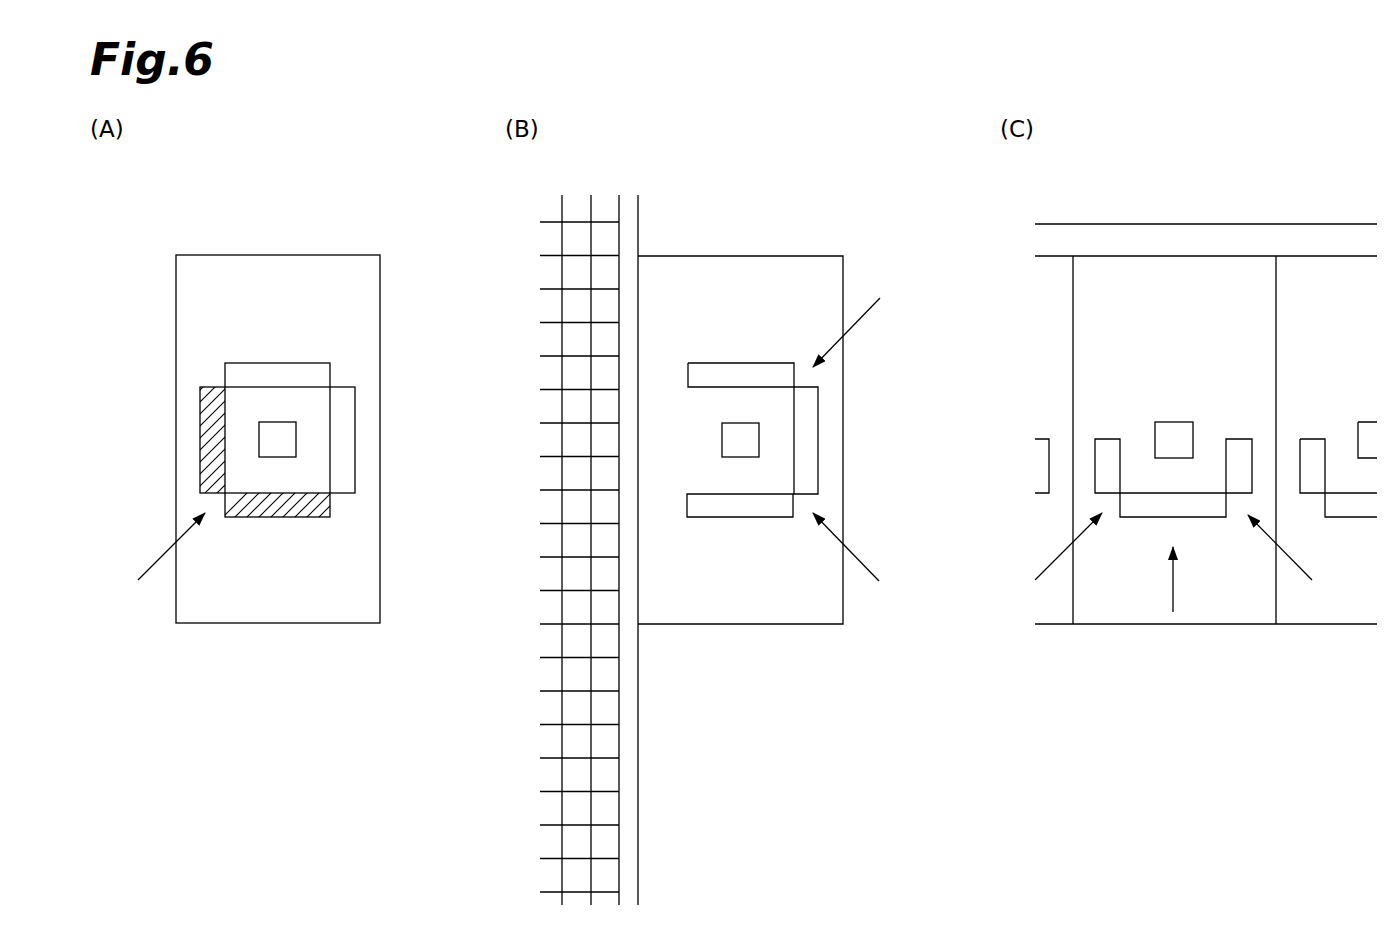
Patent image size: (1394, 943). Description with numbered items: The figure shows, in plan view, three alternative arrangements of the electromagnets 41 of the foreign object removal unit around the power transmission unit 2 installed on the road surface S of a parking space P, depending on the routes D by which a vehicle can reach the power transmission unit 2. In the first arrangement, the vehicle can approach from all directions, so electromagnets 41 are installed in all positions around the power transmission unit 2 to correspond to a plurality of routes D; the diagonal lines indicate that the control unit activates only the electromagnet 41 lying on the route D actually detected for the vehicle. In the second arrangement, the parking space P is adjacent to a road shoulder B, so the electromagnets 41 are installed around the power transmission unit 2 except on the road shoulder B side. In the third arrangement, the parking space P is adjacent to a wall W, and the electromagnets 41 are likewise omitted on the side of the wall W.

In FIG. 6A, the electromagnet 41 is at (311, 370).
In FIG. 6B, the electromagnet 41 is at (748, 372).
In FIG. 6C, the electromagnet 41 is at (1206, 478).
In FIG. 6A, the power transmission unit 2 is at (273, 421).
In FIG. 6B, the power transmission unit 2 is at (736, 422).
In FIG. 6C, the power transmission unit 2 is at (1175, 421).
In FIG. 6A, the parking space P is at (358, 255).
In FIG. 6B, the parking space P is at (822, 256).
In FIG. 6C, the parking space P is at (1047, 352).
In FIG. 6A, the route D is at (155, 562).
In FIG. 6B, the route D is at (860, 318).
In FIG. 6C, the route D is at (1048, 558).
In FIG. 6A, the road surface S is at (275, 660).
In FIG. 6B, the road surface S is at (747, 803).
In FIG. 6C, the road surface S is at (1182, 805).
In FIG. 6B, the road shoulder B is at (639, 860).
In FIG. 6C, the wall W is at (1287, 233).